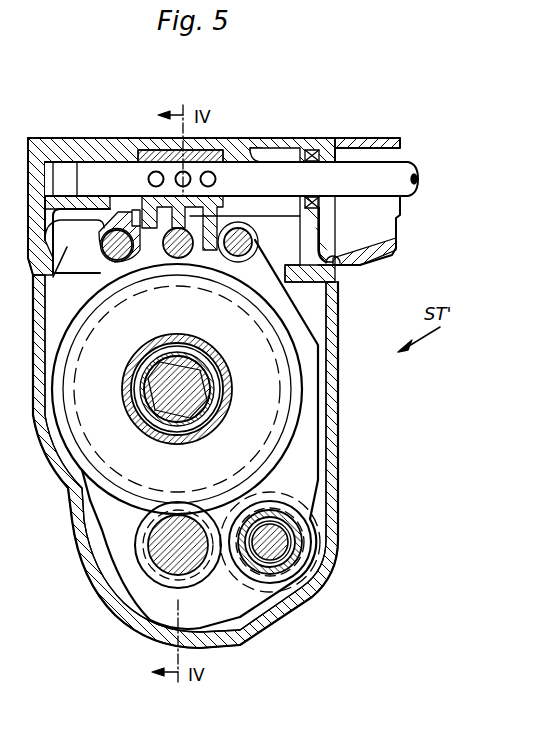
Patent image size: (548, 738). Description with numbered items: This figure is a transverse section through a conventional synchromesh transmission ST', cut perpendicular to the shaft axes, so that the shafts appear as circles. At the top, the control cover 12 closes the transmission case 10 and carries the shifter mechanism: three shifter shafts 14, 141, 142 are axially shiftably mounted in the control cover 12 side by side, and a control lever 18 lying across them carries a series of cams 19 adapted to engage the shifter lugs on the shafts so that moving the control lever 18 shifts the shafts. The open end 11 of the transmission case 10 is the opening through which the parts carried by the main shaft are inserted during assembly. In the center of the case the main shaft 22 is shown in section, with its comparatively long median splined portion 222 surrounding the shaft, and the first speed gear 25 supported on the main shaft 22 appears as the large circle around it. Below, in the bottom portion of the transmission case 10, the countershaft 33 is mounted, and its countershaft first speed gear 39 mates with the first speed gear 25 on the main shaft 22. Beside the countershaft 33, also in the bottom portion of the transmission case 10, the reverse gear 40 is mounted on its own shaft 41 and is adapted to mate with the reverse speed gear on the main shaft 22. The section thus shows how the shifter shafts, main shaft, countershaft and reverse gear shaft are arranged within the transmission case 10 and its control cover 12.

The transmission case 10 is at (330, 317).
The open end 11 is at (338, 258).
The control cover 12 is at (278, 152).
The shifter shaft 14 is at (169, 250).
The control lever 18 is at (405, 160).
The cams 19 is at (206, 155).
The main shaft 22 is at (183, 376).
The first speed gear 25 is at (190, 317).
The countershaft 33 is at (163, 571).
The countershaft first speed gear 39 is at (141, 556).
The reverse gear 40 is at (242, 579).
The shaft 41 is at (273, 553).
The shifter shaft 141 is at (255, 243).
The shifter shaft 142 is at (112, 245).
The median splined portion 222 is at (207, 408).